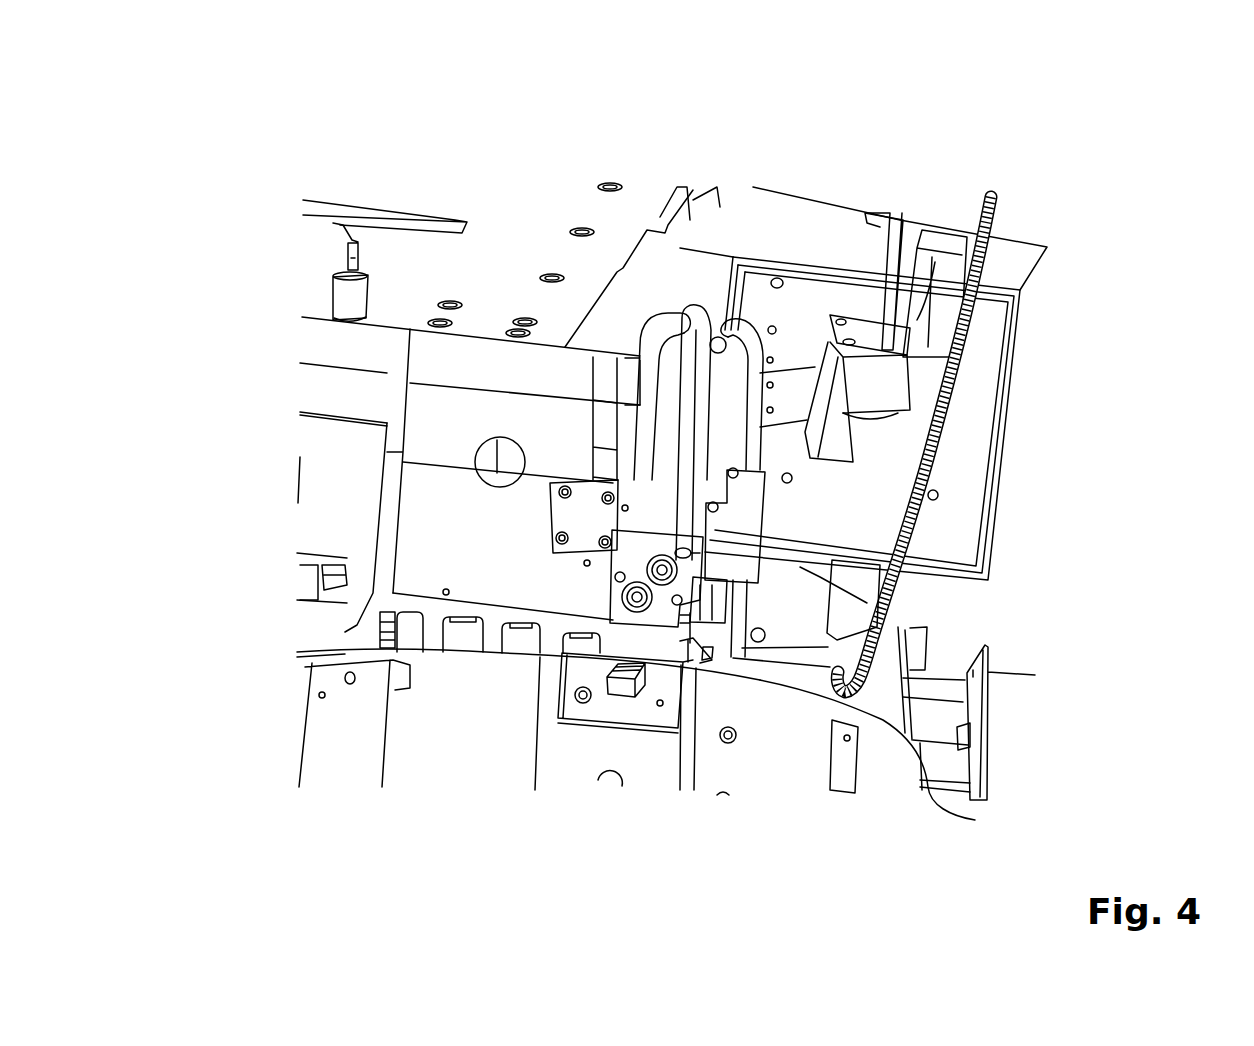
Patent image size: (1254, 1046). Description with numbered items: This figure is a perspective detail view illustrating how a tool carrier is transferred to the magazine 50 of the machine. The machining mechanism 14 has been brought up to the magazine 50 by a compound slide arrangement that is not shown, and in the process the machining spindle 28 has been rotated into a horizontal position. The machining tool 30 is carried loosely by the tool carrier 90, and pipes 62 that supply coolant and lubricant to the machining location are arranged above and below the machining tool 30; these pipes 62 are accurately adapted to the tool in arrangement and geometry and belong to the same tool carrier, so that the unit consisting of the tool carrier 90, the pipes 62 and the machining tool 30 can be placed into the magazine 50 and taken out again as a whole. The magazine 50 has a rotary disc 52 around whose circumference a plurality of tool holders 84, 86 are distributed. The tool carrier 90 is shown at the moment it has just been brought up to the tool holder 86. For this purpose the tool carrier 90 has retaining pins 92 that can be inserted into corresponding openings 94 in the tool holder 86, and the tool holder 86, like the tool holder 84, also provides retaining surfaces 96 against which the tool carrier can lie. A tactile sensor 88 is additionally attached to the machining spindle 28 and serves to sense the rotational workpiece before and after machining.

The machining mechanism 14 is at (433, 760).
The machining spindle 28 is at (377, 348).
The machining tool 30 is at (687, 247).
The magazine 50 is at (953, 427).
The rotary disc 52 is at (883, 533).
The pipes 62 is at (747, 337).
The tool holder 84 is at (933, 352).
The tool holder 86 is at (780, 622).
The tactile sensor 88 is at (338, 225).
The tool carrier 90 is at (633, 620).
The retaining pins 92 is at (713, 663).
The openings 94 is at (817, 350).
The retaining surfaces 96 is at (945, 228).